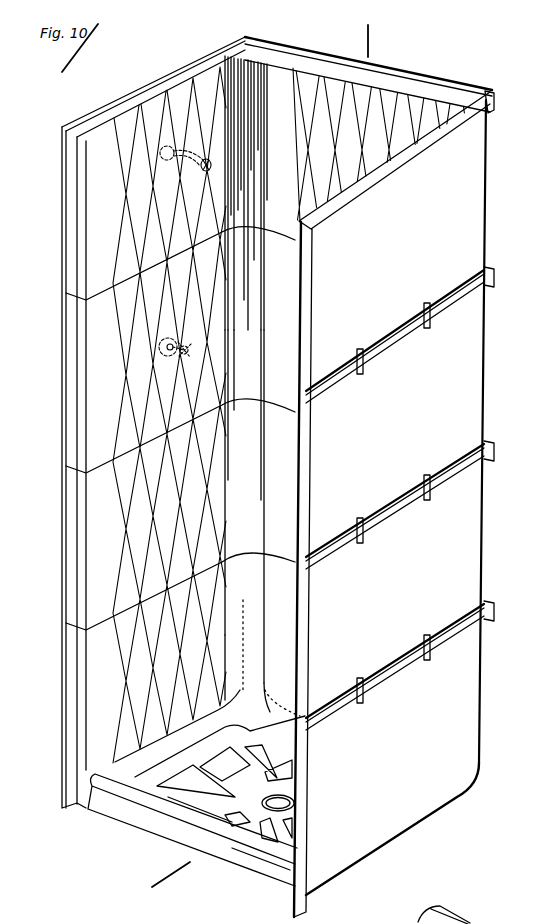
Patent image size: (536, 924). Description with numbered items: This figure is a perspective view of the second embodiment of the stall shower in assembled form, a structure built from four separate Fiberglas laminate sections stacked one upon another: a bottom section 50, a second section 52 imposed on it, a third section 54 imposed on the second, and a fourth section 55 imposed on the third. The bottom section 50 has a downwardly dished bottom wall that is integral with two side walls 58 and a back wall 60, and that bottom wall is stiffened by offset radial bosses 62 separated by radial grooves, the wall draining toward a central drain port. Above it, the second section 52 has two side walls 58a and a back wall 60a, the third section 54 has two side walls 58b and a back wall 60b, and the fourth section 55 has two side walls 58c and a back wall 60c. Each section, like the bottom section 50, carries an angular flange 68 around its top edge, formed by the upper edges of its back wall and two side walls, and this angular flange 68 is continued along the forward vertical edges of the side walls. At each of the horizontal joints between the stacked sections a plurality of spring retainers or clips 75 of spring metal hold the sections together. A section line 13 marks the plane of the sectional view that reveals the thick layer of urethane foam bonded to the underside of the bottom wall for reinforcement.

The section line 13- 13 is at (372, 38).
The bottom section 50 is at (477, 690).
The second section 52 is at (467, 540).
The third section 54 is at (467, 376).
The fourth section 55 is at (467, 194).
The side walls 58 is at (100, 678).
The side walls 58a is at (97, 548).
The side walls 58b is at (92, 400).
The side walls 58c is at (100, 232).
The back wall 60 is at (289, 623).
The back wall 60a is at (293, 488).
The back wall 60b is at (294, 305).
The back wall 60c is at (302, 168).
The offset radial bosses 62 is at (250, 780).
The angular flange 68 is at (63, 361).
The spring clips 75 is at (360, 374).